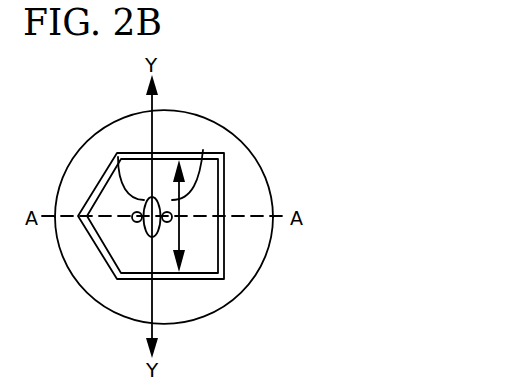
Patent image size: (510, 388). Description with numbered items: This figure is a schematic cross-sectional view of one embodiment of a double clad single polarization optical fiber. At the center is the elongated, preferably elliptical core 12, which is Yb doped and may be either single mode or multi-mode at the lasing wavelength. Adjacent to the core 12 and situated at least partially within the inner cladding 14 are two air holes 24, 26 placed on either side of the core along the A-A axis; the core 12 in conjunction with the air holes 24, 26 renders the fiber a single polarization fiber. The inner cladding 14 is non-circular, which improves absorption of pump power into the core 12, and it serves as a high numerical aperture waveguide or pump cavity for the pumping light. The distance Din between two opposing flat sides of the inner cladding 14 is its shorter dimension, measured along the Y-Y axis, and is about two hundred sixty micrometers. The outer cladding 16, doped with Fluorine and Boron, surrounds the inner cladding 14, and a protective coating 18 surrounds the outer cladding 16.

The core 12 is at (117, 153).
The inner cladding 14 is at (203, 293).
The outer cladding 16 is at (218, 240).
The protective coating 18 is at (242, 185).
The air hole 24 is at (137, 223).
The air hole 26 is at (167, 222).
The shorter dimension of the inner cladding Din is at (203, 150).